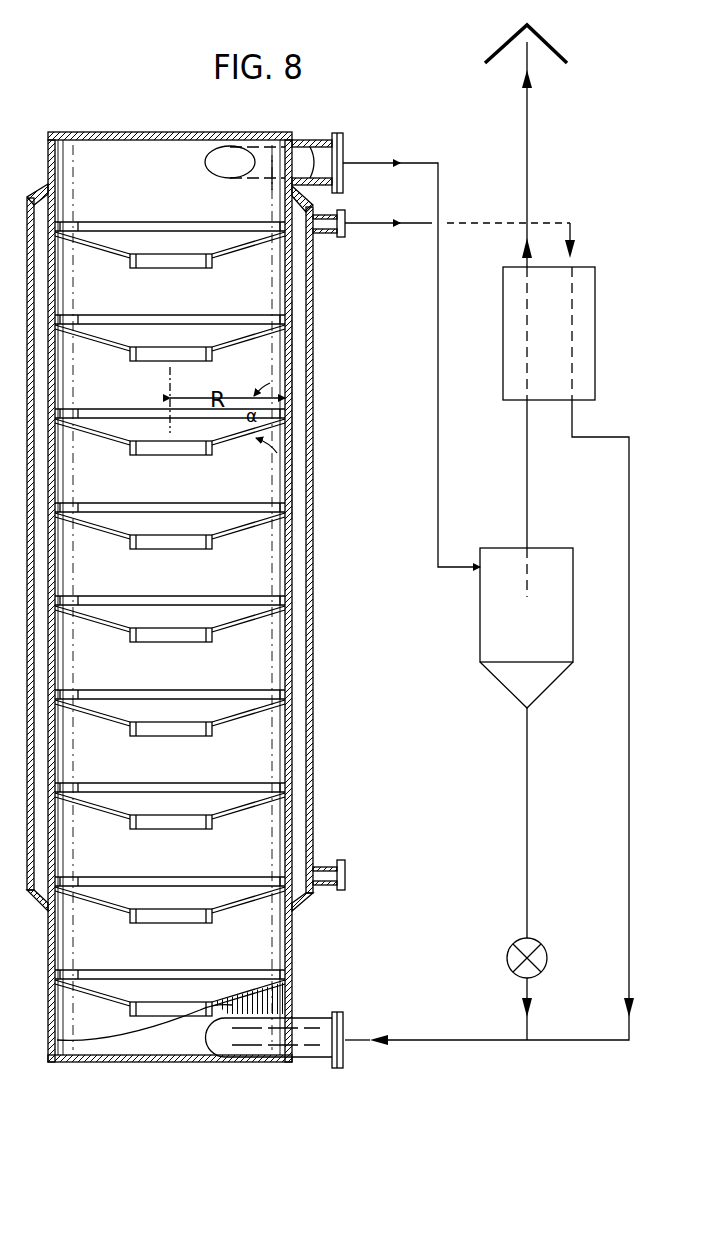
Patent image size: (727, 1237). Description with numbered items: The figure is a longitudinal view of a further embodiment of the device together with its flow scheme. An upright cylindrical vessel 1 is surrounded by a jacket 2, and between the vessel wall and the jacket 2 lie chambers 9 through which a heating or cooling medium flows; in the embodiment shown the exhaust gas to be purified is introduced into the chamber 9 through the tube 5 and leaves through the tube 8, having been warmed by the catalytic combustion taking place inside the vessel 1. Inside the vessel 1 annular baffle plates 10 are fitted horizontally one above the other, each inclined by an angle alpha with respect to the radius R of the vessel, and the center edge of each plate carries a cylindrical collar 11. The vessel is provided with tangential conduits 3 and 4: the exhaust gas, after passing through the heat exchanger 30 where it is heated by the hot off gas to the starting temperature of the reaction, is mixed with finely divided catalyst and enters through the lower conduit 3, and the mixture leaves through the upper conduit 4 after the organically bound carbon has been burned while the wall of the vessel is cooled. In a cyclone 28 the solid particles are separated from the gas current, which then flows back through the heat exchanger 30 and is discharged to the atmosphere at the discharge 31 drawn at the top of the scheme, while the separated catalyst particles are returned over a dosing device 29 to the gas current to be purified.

The upright cylindrical vessel 1 is at (110, 133).
The jacket 2 is at (313, 663).
The tangential conduit 3 is at (317, 1030).
The tangential conduit 4 is at (310, 140).
The tube 5 is at (331, 888).
The tube 8 is at (333, 238).
The chamber 9 is at (298, 422).
The annular baffle plate 10 is at (225, 534).
The cylindrical collar 11 is at (210, 633).
The cyclone 28 is at (487, 625).
The dosing device 29 is at (547, 958).
The heat exchanger 30 is at (592, 318).
The vent 31 is at (497, 50).